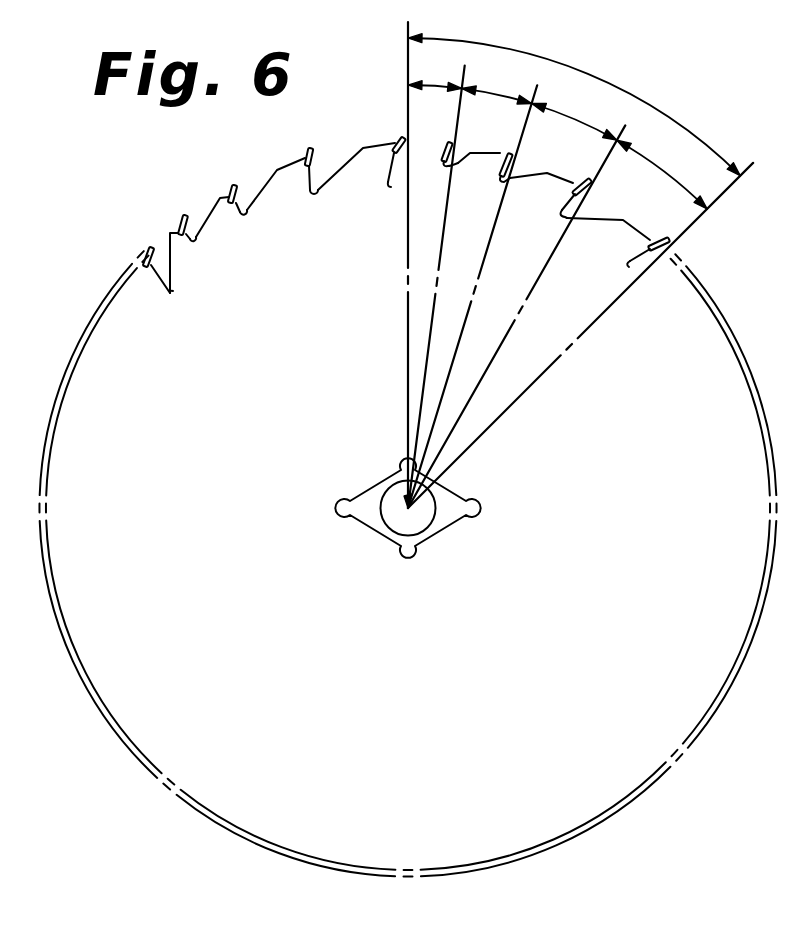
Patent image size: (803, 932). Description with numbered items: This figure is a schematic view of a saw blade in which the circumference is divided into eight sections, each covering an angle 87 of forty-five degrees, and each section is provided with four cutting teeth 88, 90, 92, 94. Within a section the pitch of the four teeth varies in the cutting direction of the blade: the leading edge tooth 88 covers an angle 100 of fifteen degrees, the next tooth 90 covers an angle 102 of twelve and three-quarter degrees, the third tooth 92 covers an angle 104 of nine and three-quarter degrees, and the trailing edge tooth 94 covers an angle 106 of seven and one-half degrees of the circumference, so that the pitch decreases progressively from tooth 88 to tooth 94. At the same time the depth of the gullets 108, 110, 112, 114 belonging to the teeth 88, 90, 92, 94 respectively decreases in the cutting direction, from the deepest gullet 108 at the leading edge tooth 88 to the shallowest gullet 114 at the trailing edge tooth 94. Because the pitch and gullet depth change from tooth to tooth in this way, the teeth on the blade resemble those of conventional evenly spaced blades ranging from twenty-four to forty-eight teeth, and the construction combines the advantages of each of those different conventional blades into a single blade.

The angle 87 is at (600, 74).
The cutting tooth 88 is at (368, 157).
The cutting tooth 90 is at (288, 175).
The cutting tooth 92 is at (222, 200).
The cutting tooth 94 is at (178, 230).
The angle 100 is at (659, 170).
The angle 102 is at (571, 122).
The angle 104 is at (496, 94).
The angle 106 is at (432, 82).
The gullet 108 is at (389, 186).
The gullet 110 is at (318, 191).
The gullet 112 is at (247, 213).
The gullet 114 is at (197, 231).